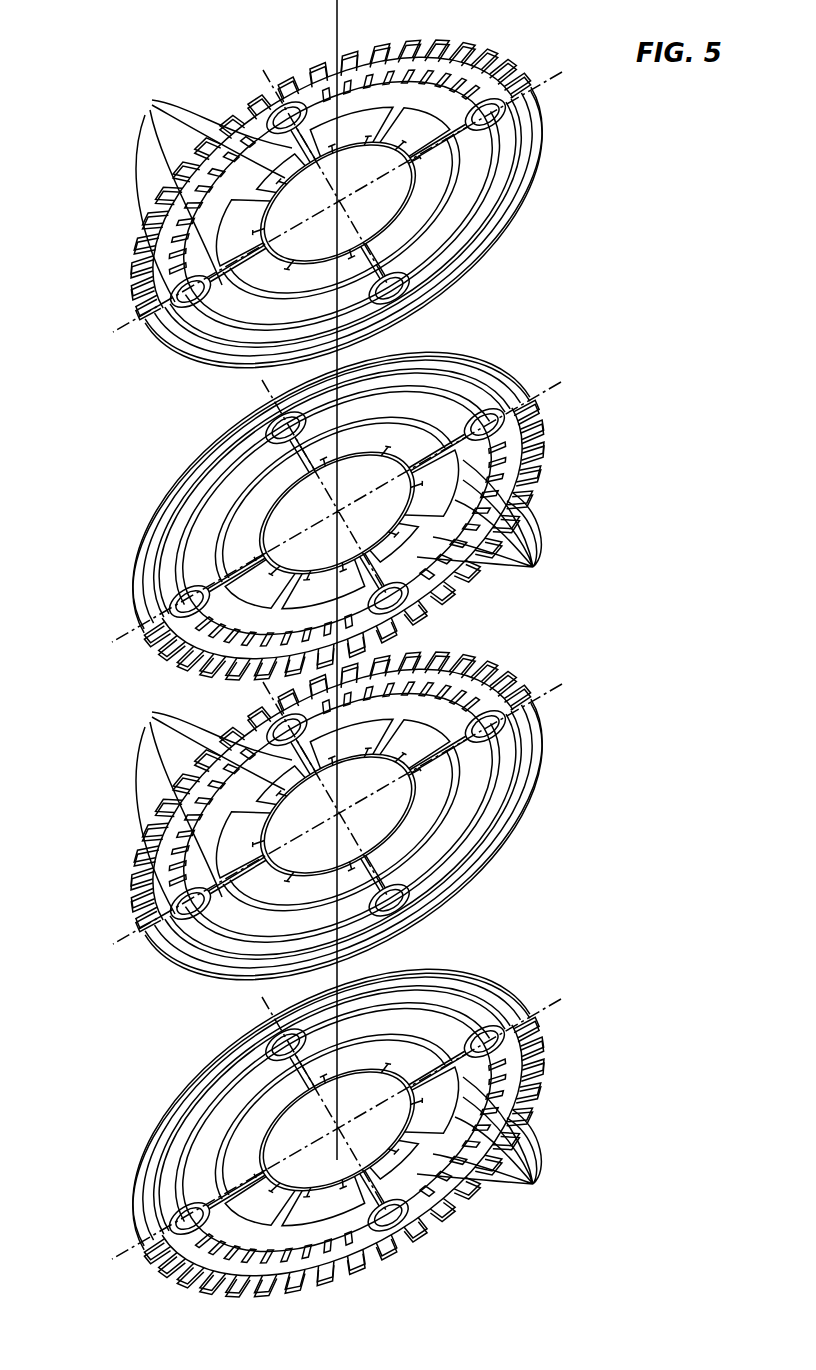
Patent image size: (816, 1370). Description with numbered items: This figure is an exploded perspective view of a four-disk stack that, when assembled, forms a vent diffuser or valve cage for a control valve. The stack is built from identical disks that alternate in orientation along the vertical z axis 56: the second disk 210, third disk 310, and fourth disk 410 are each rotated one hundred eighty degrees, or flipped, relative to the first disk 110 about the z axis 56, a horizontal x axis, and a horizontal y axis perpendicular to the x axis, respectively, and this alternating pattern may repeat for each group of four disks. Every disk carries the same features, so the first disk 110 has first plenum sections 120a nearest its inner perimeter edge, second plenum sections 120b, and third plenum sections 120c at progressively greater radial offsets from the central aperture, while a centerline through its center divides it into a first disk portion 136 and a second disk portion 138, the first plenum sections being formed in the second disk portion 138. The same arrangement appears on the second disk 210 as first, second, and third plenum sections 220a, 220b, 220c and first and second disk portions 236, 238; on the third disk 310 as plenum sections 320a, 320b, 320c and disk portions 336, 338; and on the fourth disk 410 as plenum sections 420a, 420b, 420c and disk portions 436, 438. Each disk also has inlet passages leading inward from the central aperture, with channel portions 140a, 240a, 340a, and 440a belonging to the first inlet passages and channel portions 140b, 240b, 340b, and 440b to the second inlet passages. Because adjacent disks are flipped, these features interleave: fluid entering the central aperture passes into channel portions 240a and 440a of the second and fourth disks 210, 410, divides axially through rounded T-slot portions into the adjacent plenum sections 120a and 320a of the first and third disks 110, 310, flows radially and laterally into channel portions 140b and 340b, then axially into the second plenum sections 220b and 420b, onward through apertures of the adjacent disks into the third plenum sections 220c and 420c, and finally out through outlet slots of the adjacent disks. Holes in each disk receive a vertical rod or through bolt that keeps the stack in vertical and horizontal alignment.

The z axis 56 is at (340, 48).
The first disk 110 is at (457, 70).
The plenum sections 120a is at (328, 169).
The first disc intermediate ring 120b is at (338, 203).
The first disc outer rim 120c is at (371, 258).
The first disc rim portion 136 is at (178, 364).
The first disc toothed portion 138 is at (123, 247).
The first disc pins 140a is at (410, 166).
The channel portion 140b is at (197, 199).
The second disk 210 is at (523, 428).
The second disc inner plates 220a is at (346, 547).
The second plenum sections 220b is at (337, 513).
The third plenum sections 220c is at (303, 457).
The second disc rim portion 236 is at (123, 567).
The second disc toothed portion 238 is at (178, 684).
The channel portion 240a is at (381, 458).
The second disc flexible fingers 240b is at (497, 523).
The third disk 310 is at (480, 695).
The plenum sections 320a is at (328, 781).
The third disc intermediate ring 320b is at (338, 815).
The third disc outer rim 320c is at (371, 870).
The third disc rim portion 336 is at (178, 984).
The third disc toothed portion 338 is at (123, 867).
The third disc pins 340a is at (410, 779).
The channel portion 340b is at (197, 813).
The fourth disk 410 is at (525, 1050).
The fourth disc inner plates 420a is at (346, 1164).
The second plenum sections 420b is at (337, 1130).
The third plenum sections 420c is at (303, 1074).
The fourth disc rim portion 436 is at (123, 1182).
The fourth disc toothed portion 438 is at (178, 1279).
The channel portion 440a is at (378, 1068).
The fourth disc flexible fingers 440b is at (535, 1184).